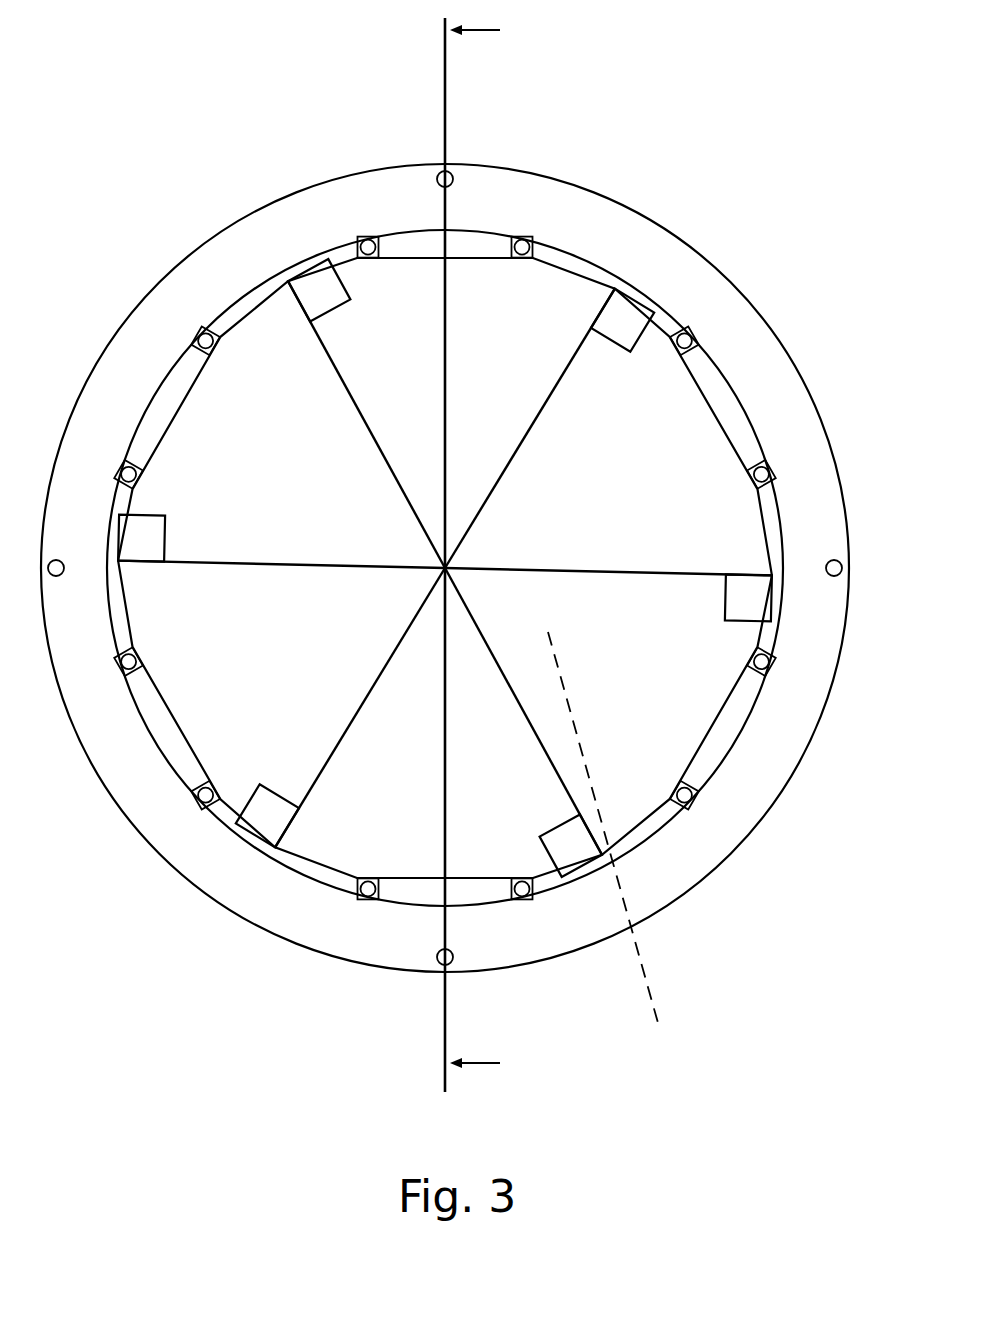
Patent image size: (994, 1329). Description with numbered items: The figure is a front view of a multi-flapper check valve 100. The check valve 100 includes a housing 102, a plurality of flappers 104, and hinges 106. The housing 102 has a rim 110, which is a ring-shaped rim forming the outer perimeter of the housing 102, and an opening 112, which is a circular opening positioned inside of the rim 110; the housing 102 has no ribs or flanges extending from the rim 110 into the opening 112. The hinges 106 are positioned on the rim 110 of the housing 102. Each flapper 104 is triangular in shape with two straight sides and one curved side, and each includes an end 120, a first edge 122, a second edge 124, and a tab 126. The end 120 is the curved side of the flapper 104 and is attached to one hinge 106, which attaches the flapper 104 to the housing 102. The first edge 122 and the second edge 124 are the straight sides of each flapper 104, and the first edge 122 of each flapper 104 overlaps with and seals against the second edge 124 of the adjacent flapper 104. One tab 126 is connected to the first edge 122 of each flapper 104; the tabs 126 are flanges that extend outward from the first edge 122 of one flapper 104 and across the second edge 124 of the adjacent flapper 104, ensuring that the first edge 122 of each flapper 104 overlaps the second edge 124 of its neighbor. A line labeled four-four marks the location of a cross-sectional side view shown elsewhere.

The check valve 100 is at (146, 129).
The housing 102 is at (355, 200).
The flappers 104 is at (545, 318).
The hinges 106 is at (485, 240).
The rim 110 is at (718, 318).
The opening 112 is at (619, 849).
The end 120 is at (244, 311).
The first edge 122 is at (340, 399).
The second edge 124 is at (290, 556).
The tab 126 is at (322, 288).